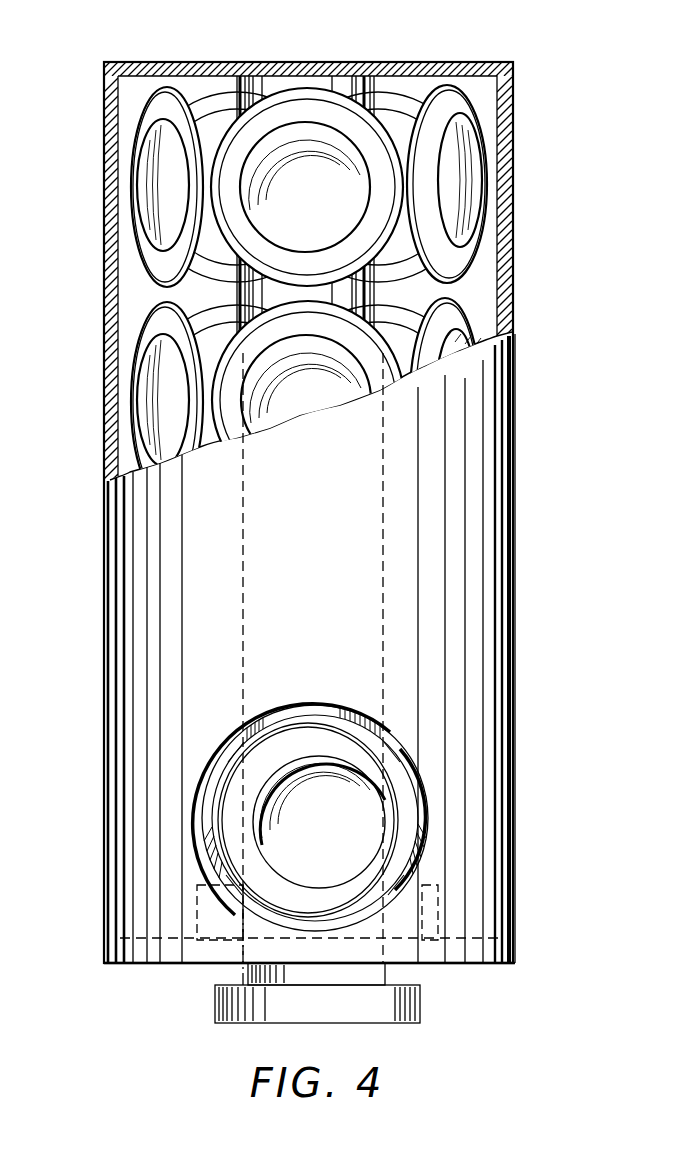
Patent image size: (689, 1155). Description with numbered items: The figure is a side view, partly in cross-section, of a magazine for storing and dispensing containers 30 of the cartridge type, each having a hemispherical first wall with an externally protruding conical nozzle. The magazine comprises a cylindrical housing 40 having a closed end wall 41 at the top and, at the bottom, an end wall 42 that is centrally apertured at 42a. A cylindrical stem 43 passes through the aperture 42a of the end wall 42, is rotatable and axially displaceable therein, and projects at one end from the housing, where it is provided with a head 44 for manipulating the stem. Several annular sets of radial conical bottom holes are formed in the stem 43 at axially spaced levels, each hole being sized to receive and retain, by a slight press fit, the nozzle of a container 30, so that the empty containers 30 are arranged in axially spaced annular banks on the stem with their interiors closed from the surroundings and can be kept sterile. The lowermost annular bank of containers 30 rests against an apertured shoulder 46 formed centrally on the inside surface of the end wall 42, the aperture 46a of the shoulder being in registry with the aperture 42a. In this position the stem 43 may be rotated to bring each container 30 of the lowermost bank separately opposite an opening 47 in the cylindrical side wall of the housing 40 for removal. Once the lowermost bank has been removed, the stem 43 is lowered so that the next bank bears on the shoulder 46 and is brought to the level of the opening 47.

The container 30 is at (206, 86).
The cylindrical housing 40 is at (528, 536).
The closed end wall 41 is at (456, 62).
The end wall 42 is at (463, 963).
The aperture 42a is at (243, 945).
The cylindrical stem 43 is at (345, 84).
The head 44 is at (420, 1005).
The apertured shoulder 46 is at (438, 898).
The aperture 46a is at (245, 920).
The opening 47 is at (426, 812).